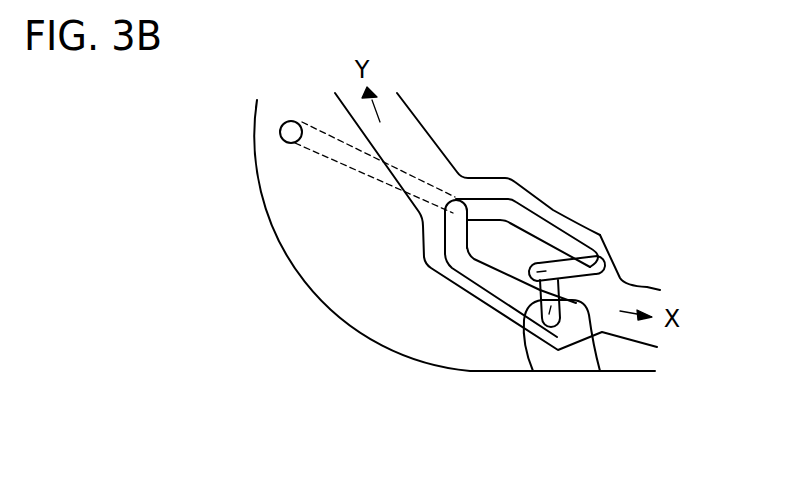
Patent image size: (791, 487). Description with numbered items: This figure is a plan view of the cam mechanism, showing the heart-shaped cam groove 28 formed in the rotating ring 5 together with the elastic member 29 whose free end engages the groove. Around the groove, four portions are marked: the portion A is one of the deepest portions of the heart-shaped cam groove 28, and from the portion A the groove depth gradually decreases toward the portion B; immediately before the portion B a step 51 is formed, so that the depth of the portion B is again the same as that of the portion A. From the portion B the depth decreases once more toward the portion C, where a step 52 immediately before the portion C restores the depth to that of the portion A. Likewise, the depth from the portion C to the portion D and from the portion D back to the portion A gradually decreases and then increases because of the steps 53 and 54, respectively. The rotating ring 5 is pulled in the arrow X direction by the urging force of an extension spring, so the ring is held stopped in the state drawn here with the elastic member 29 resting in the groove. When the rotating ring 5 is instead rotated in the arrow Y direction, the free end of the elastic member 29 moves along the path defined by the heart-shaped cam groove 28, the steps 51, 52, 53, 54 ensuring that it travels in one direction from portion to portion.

The rotating ring 5 is at (413, 130).
The heart-shaped cam groove 28 is at (523, 223).
The elastic member 29 is at (352, 158).
The step 51 is at (533, 371).
The step 52 is at (600, 371).
The step 53 is at (642, 285).
The step 54 is at (467, 214).
The portion A is at (447, 210).
The portion B is at (550, 321).
The portion C is at (530, 272).
The portion D is at (592, 257).